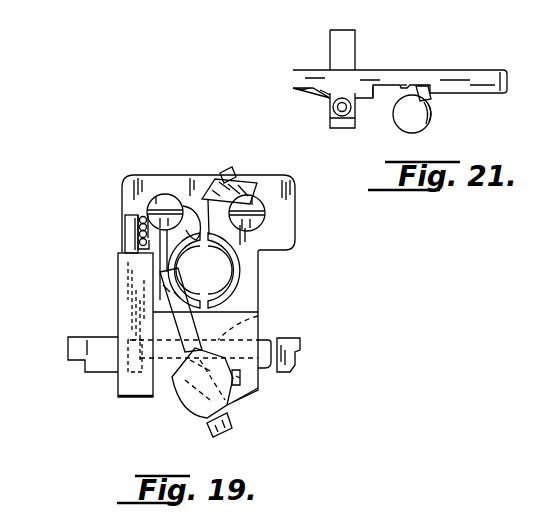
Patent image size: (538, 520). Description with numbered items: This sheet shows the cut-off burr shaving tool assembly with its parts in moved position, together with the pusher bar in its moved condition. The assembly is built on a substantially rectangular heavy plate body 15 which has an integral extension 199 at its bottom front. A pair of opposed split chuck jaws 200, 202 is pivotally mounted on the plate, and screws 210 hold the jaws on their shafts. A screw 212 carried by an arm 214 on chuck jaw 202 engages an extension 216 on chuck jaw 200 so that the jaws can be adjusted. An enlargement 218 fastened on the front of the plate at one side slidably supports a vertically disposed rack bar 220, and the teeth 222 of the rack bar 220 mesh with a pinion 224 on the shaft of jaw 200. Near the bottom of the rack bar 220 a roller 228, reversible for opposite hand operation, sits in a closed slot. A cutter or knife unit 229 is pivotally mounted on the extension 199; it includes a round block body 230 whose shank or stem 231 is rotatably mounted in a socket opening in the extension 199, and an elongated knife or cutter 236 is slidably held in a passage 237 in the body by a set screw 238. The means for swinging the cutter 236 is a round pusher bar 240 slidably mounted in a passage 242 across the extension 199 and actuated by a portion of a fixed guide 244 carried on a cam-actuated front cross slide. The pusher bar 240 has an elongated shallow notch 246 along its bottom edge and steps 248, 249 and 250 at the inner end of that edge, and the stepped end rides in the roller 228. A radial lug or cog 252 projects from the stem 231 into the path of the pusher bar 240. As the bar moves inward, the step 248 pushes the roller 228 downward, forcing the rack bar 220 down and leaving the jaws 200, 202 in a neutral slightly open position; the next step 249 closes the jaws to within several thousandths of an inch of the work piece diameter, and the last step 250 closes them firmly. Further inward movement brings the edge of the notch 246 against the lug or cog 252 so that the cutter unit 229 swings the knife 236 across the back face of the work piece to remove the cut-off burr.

In FIG. 19, the plate body 15 is at (130, 185).
In FIG. 19, the extension 199 is at (248, 388).
In FIG. 19, the split chuck jaw 200 is at (163, 258).
In FIG. 19, the split chuck jaw 202 is at (232, 272).
In FIG. 19, the screw 210 is at (165, 205).
In FIG. 19, the screw 212 is at (226, 176).
In FIG. 19, the arm 214 is at (232, 198).
In FIG. 19, the extension 216 is at (206, 208).
In FIG. 19, the enlargement 218 is at (128, 297).
In FIG. 19, the rack bar 220 is at (125, 220).
In FIG. 21, the rack bar 220 is at (343, 37).
In FIG. 19, the teeth 222 is at (139, 241).
In FIG. 19, the pinion 224 is at (139, 233).
In FIG. 21, the roller 228 is at (331, 107).
In FIG. 19, the cutter or knife unit 229 is at (190, 428).
In FIG. 19, the block body 230 is at (190, 392).
In FIG. 21, the shank or stem 231 is at (418, 128).
In FIG. 19, the knife or cutter 236 is at (178, 295).
In FIG. 19, the passage 237 is at (245, 405).
In FIG. 19, the set screw 238 is at (242, 380).
In FIG. 19, the pusher bar 240 is at (265, 340).
In FIG. 21, the pusher bar 240 is at (472, 77).
In FIG. 19, the passage 242 is at (256, 316).
In FIG. 19, the fixed guide 244 is at (303, 340).
In FIG. 21, the notch 246 is at (401, 86).
In FIG. 21, the step 248 is at (300, 90).
In FIG. 21, the step 249 is at (335, 93).
In FIG. 21, the step 250 is at (373, 98).
In FIG. 21, the lug or cog 252 is at (431, 98).